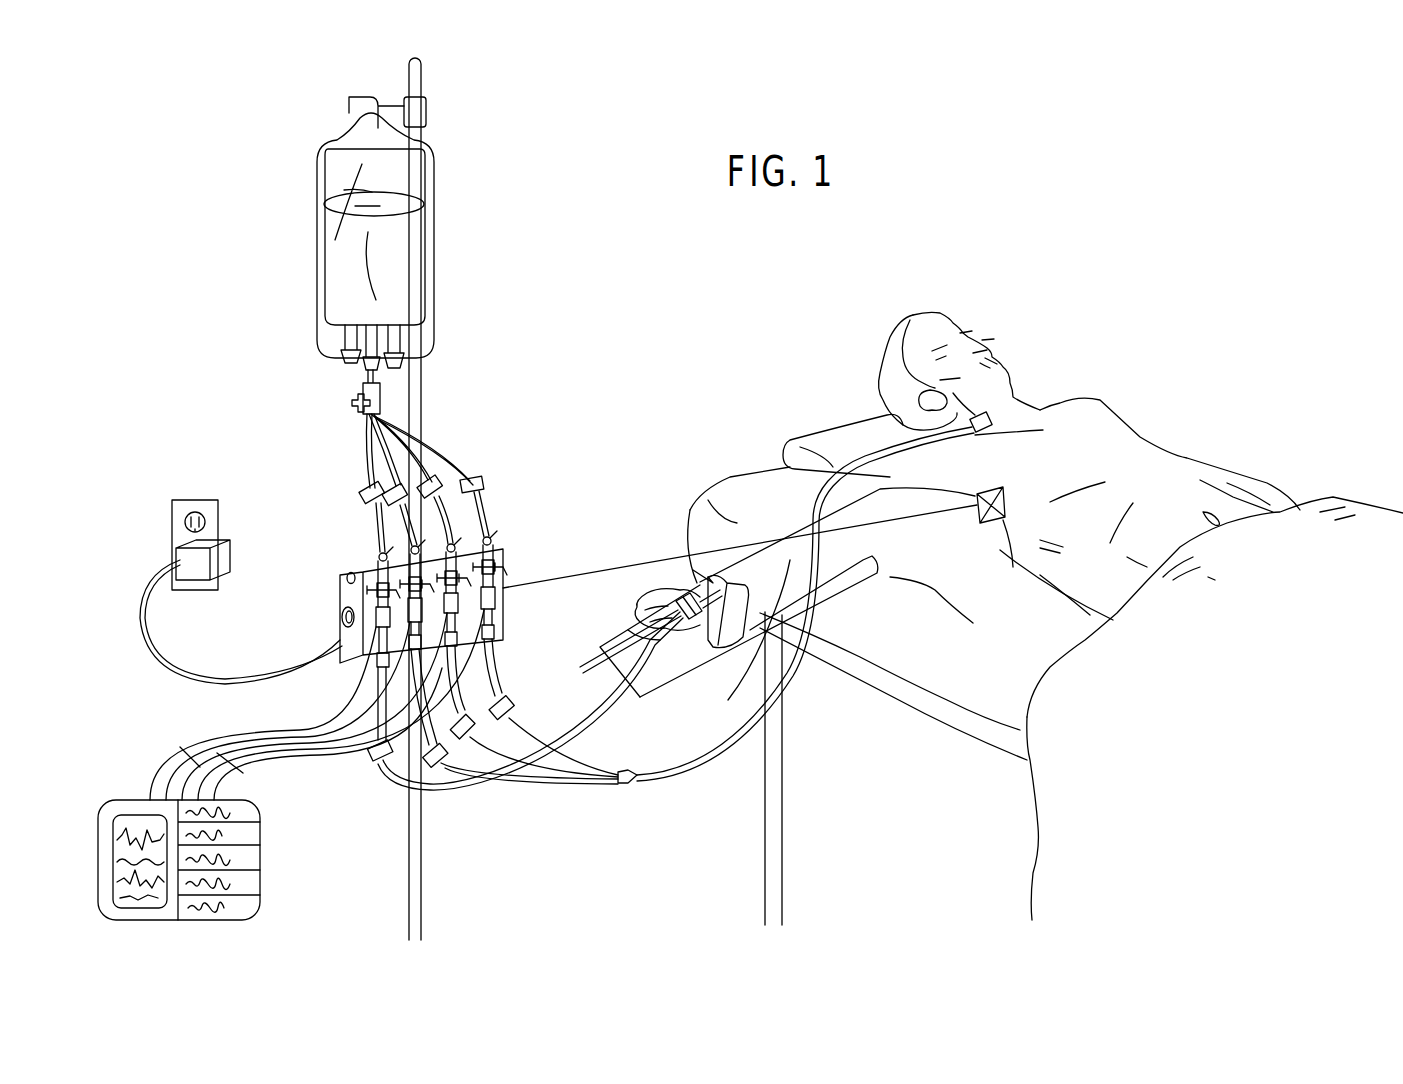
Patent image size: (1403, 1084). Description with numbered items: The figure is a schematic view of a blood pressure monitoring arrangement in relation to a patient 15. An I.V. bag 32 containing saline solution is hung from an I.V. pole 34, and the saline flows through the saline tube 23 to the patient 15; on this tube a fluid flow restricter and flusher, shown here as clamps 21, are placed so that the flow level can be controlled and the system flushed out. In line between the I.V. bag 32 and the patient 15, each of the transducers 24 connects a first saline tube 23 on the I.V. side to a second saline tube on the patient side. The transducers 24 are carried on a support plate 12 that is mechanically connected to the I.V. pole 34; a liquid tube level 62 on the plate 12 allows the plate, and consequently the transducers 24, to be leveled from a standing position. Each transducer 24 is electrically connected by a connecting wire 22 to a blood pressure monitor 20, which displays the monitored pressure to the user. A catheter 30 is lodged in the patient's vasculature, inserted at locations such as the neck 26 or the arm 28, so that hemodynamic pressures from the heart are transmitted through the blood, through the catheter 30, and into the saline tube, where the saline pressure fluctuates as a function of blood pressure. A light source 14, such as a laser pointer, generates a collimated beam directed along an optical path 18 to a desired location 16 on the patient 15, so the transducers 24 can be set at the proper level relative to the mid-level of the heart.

The support plate 12 is at (504, 622).
The light source 14 is at (340, 619).
The patient 15 is at (1161, 444).
The desired location 16 is at (1013, 525).
The optical path 18 is at (626, 568).
The blood pressure monitor 20 is at (262, 860).
The tubing clamps 21 is at (432, 474).
The connecting wire 22 is at (182, 748).
The fluid tubing 23 is at (440, 508).
The transducers 24 is at (370, 600).
The neck 26 is at (1010, 405).
The arm 28 is at (790, 523).
The catheter 30 is at (733, 694).
The I.V. bag 32 is at (435, 245).
The I.V. pole 34 is at (423, 388).
The liquid tube level 62 is at (350, 573).